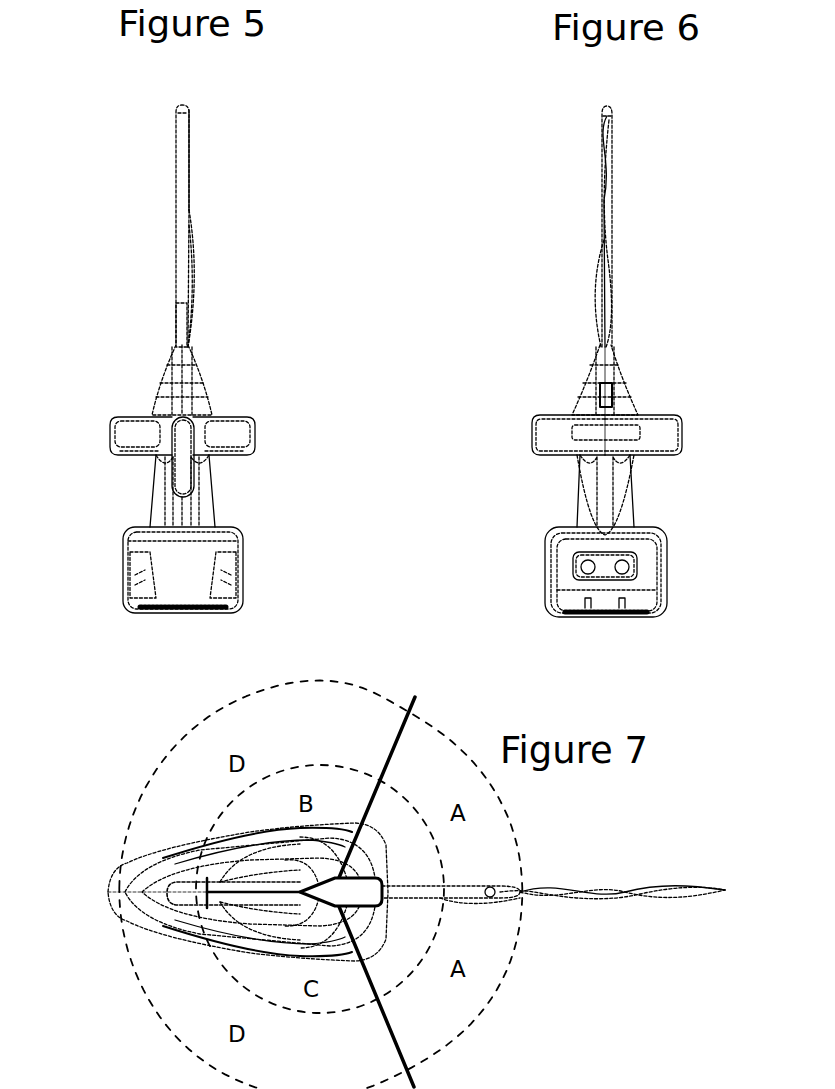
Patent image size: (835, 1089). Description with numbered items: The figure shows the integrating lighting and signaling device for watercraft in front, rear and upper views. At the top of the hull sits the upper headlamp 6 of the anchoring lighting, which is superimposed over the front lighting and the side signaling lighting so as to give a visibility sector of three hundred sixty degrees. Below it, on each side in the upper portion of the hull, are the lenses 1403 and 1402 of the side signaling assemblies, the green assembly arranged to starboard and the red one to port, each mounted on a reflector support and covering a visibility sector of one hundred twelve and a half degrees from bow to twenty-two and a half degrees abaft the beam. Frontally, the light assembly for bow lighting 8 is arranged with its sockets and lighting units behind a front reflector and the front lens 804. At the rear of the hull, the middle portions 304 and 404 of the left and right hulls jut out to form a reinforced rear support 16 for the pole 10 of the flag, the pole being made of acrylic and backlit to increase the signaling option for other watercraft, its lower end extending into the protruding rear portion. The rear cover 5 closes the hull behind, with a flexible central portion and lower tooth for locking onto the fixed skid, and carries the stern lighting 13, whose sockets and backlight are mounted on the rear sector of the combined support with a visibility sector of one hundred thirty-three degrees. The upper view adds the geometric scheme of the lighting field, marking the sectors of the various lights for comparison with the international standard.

In FIG. 5, the upper headlamp 6 is at (163, 386).
In FIG. 7, the upper headlamp 6 is at (318, 860).
In FIG. 5, the lens 1403 is at (115, 432).
In FIG. 7, the lens 1403 is at (248, 850).
In FIG. 5, the lens 1402 is at (247, 437).
In FIG. 7, the lens 1402 is at (247, 955).
In FIG. 5, the front lens 804 is at (184, 480).
In FIG. 6, the rear support 16 is at (614, 396).
In FIG. 6, the middle portion 304 is at (540, 418).
In FIG. 6, the middle portion 404 is at (668, 418).
In FIG. 6, the rear cover 5 is at (572, 586).
In FIG. 6, the stern lighting 13 is at (622, 575).
In FIG. 7, the light assembly for bow lighting 8 is at (183, 910).
In FIG. 7, the pole 10 is at (395, 900).